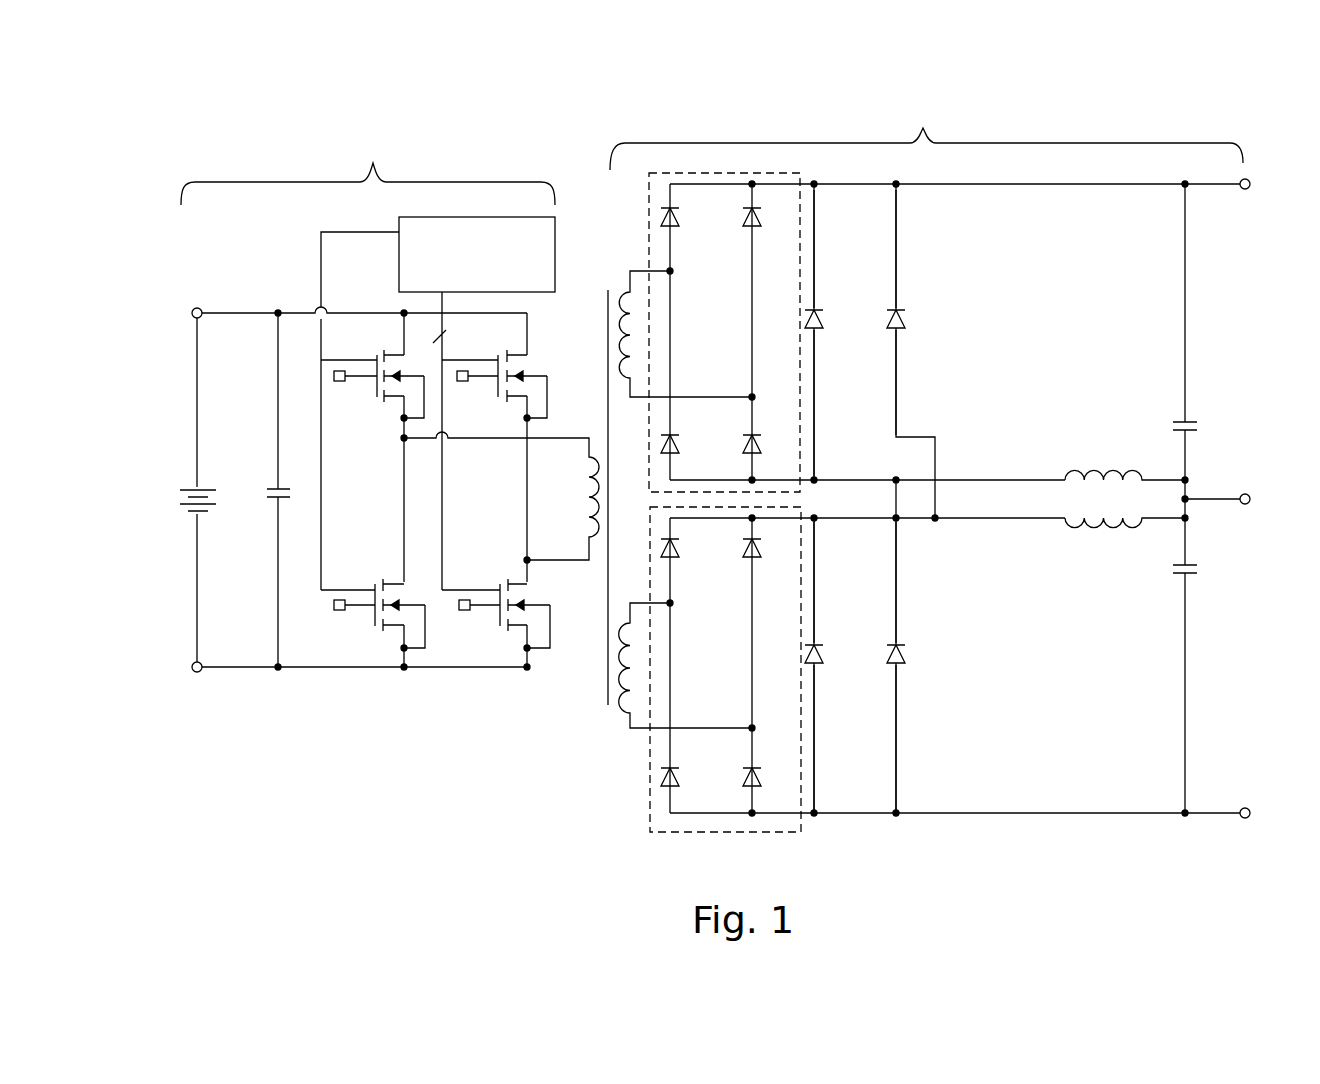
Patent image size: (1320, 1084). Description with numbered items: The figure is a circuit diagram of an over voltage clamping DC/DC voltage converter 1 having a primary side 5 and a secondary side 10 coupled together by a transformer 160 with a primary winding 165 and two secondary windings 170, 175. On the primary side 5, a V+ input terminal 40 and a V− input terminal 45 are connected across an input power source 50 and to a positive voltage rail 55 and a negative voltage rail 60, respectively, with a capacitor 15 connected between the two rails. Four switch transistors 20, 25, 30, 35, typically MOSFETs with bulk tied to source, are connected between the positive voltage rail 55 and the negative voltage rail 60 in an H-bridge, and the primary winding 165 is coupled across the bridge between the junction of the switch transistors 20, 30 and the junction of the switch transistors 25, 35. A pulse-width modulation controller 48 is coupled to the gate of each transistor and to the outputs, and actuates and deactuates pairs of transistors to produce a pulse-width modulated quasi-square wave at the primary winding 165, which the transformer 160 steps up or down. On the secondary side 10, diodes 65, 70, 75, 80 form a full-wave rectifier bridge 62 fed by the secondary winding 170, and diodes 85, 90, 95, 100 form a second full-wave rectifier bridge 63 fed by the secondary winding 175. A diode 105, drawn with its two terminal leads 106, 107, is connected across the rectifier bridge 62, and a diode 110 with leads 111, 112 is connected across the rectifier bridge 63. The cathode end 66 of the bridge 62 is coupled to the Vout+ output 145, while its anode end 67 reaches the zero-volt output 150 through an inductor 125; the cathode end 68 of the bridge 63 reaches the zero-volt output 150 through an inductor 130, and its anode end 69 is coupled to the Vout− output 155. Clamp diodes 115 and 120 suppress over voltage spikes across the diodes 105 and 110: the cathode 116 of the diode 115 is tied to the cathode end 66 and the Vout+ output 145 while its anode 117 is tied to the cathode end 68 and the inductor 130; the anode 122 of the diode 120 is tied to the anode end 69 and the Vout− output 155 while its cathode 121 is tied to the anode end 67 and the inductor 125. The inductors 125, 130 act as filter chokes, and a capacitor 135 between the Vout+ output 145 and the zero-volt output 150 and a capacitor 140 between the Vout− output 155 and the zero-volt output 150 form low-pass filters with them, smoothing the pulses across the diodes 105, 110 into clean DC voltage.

The over voltage clamping DC/DC voltage converter 1 is at (172, 155).
The primary side 5 is at (368, 172).
The secondary side 10 is at (926, 136).
The capacitor 15 is at (277, 488).
The switch transistor 20 is at (378, 412).
The switch transistor 25 is at (488, 383).
The switch transistor 30 is at (375, 555).
The switch transistor 35 is at (470, 554).
The V+ input terminal 40 is at (200, 308).
The V− input terminal 45 is at (200, 673).
The pulse-width modulation (PWM) controller 48 is at (557, 232).
The input power source 50 is at (219, 521).
The positive voltage rail 55 is at (365, 311).
The negative voltage rail 60 is at (352, 669).
The full-wave rectifier bridge 62 is at (645, 198).
The full-wave rectifier bridge 63 is at (750, 833).
The diode 65 is at (689, 238).
The cathode end of rectifier bridge 66 is at (755, 183).
The anode end of rectifier bridge 67 is at (752, 478).
The cathode end of rectifier bridge 68 is at (755, 515).
The anode end of rectifier bridge 69 is at (754, 816).
The diode 70 is at (768, 238).
The diode 75 is at (679, 433).
The diode 80 is at (763, 427).
The diode 85 is at (698, 578).
The diode 90 is at (774, 576).
The diode 95 is at (691, 772).
The diode 100 is at (773, 757).
The diode 105 is at (834, 293).
The cathode lead of diode D9 106 is at (814, 306).
The anode lead of diode D9 107 is at (817, 332).
The diode 110 is at (828, 633).
The cathode lead of diode D10 111 is at (817, 640).
The anode lead of diode D10 112 is at (818, 665).
The diode 115 is at (918, 305).
The cathode of diode 115 116 is at (896, 306).
The anode of diode 115 117 is at (895, 332).
The diode 120 is at (914, 633).
The cathode of diode 120 121 is at (897, 640).
The anode of diode 120 122 is at (898, 665).
The inductor 125 is at (1088, 452).
The inductor 130 is at (1082, 536).
The capacitor 135 is at (1203, 397).
The capacitor 140 is at (1194, 589).
The Vout+ output 145 is at (1247, 178).
The Vout0V output 150 is at (1245, 505).
The Vout− output 155 is at (1245, 819).
The transformer 160 is at (607, 738).
The primary winding 165 is at (587, 576).
The secondary winding 170 is at (613, 266).
The secondary winding 175 is at (632, 744).